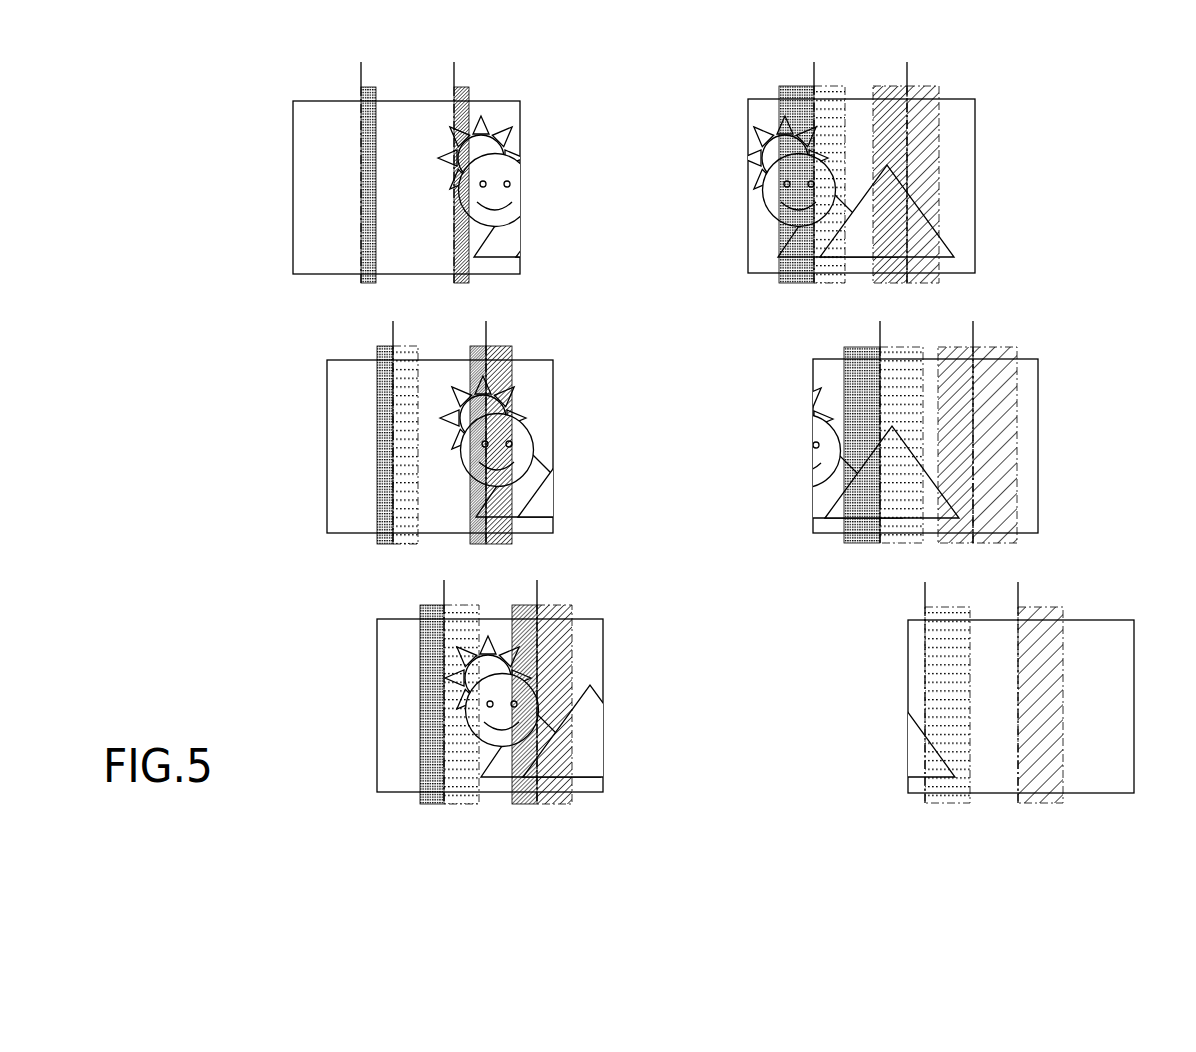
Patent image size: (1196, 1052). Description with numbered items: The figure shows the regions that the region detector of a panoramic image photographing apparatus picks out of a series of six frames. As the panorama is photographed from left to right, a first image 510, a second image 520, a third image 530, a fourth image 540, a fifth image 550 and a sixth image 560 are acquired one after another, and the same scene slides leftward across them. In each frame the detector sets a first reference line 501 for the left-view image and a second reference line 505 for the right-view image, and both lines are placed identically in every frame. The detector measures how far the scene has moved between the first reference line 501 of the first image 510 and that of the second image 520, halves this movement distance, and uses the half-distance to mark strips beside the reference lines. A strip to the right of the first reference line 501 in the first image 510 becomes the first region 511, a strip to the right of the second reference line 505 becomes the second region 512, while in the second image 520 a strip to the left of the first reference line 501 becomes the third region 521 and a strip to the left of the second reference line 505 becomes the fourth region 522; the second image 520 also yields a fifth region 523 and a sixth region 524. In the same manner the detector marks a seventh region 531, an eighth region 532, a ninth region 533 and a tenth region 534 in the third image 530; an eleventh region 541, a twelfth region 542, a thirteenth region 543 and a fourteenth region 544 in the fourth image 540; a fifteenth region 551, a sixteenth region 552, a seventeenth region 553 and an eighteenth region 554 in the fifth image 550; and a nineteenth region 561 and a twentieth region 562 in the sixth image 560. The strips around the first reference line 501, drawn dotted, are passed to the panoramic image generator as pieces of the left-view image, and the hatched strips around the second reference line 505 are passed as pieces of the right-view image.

The first reference line 501 is at (376, 68).
The second reference line 505 is at (467, 69).
The first image 510 is at (269, 181).
The first region 511 is at (363, 133).
The second region 512 is at (470, 107).
The second image 520 is at (304, 464).
The third region 521 is at (385, 397).
The fourth region 522 is at (507, 367).
The fifth region 523 is at (403, 430).
The sixth region 524 is at (508, 428).
The third image 530 is at (357, 751).
The seventh region 531 is at (440, 675).
The eighth region 532 is at (570, 632).
The ninth region 533 is at (453, 723).
The tenth region 534 is at (557, 670).
The fourth image 540 is at (726, 179).
The eleventh region 541 is at (785, 238).
The twelfth region 542 is at (903, 128).
The thirteenth region 543 is at (820, 268).
The fourteenth region 544 is at (933, 167).
The fifth image 550 is at (792, 466).
The fifteenth region 551 is at (857, 382).
The sixteenth region 552 is at (963, 393).
The seventeenth region 553 is at (893, 415).
The eighteenth region 554 is at (1010, 473).
The sixth image 560 is at (886, 684).
The nineteenth region 561 is at (935, 658).
The twentieth region 562 is at (1053, 722).